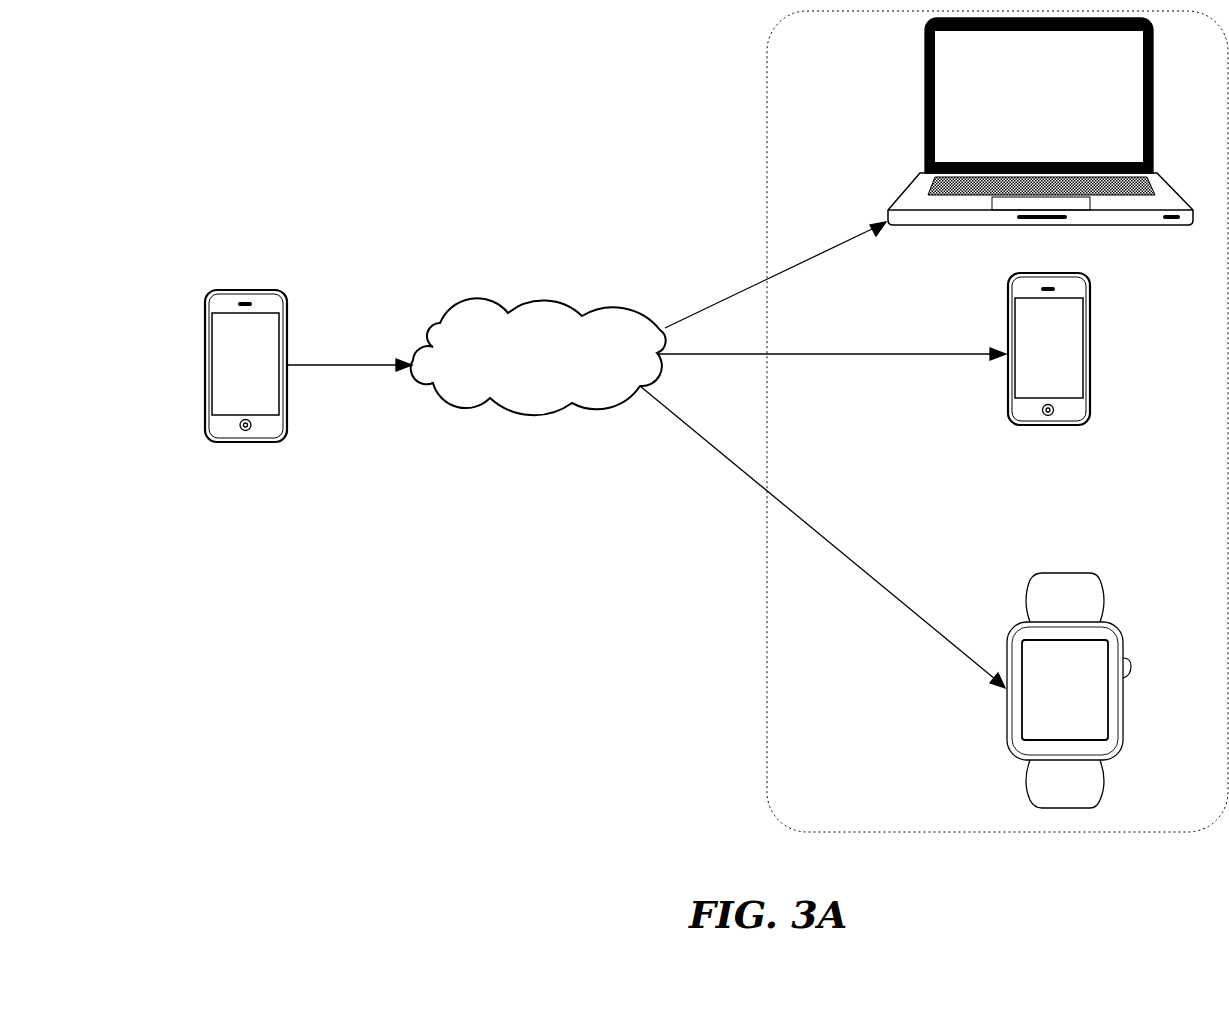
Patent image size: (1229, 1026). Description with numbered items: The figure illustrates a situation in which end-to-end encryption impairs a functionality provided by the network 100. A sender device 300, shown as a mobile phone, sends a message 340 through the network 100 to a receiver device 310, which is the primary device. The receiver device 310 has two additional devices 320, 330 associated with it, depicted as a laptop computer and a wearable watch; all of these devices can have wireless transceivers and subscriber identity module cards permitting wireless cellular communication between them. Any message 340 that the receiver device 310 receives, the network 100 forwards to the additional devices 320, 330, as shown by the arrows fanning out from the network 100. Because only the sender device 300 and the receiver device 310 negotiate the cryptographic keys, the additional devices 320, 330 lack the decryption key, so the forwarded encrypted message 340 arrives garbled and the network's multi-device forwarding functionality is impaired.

The network 100 is at (524, 369).
The sender device 300 is at (212, 290).
The receiver device 310 is at (1006, 320).
The additional device 320 is at (925, 83).
The additional device 330 is at (1066, 573).
The message 340 is at (331, 355).